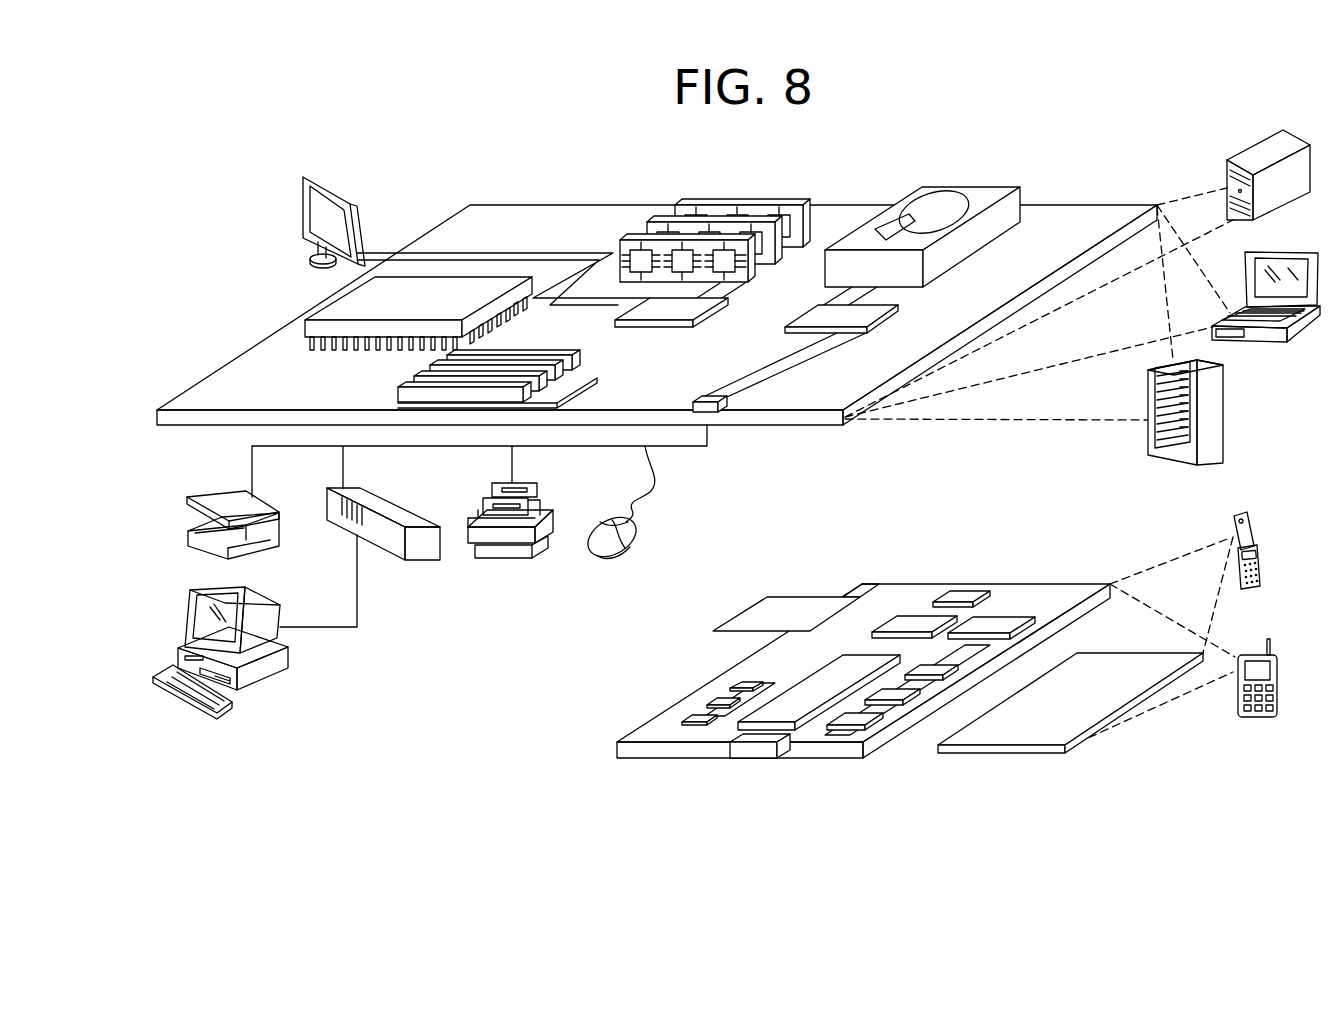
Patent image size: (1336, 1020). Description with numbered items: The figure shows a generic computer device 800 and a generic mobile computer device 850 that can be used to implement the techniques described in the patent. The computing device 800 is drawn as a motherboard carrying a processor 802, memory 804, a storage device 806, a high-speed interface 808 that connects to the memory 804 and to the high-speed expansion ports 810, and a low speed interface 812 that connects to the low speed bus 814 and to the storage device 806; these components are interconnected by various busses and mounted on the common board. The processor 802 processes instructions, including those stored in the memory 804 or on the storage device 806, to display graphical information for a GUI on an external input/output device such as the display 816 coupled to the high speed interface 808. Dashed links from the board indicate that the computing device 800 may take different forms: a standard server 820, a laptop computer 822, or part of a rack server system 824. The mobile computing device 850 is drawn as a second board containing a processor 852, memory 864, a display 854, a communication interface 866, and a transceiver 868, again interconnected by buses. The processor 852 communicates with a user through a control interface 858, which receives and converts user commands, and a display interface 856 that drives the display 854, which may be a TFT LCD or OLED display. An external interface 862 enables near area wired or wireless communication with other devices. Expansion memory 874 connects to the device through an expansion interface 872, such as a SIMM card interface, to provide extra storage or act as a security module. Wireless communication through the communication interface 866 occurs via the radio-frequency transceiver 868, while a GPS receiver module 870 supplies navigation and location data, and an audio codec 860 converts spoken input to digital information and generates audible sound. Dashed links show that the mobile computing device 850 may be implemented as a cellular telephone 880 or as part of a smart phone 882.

The computing device 800 is at (422, 153).
The processor 802 is at (330, 300).
The memory 804 is at (746, 200).
The storage device 806 is at (961, 184).
The high-speed interface 808 is at (686, 322).
The high-speed expansion ports 810 is at (421, 378).
The low speed interface 812 is at (815, 308).
The low speed bus 814 is at (712, 395).
The display 816 is at (306, 176).
The standard server 820 is at (1247, 159).
The laptop computer 822 is at (1296, 251).
The rack server system 824 is at (1224, 412).
The mobile computing device 850 is at (568, 770).
The processor 852 is at (790, 696).
The display 854 is at (1105, 667).
The display interface 856 is at (865, 722).
The control interface 858 is at (900, 692).
The audio codec 860 is at (936, 665).
The external interface 862 is at (755, 745).
The memory 864 is at (710, 703).
The communication interface 866 is at (915, 614).
The transceiver 868 is at (1000, 617).
The GPS receiver module 870 is at (960, 591).
The expansion interface 872 is at (843, 596).
The expansion memory 874 is at (765, 596).
The cellular telephone 880 is at (1240, 512).
The smart phone 882 is at (1255, 655).